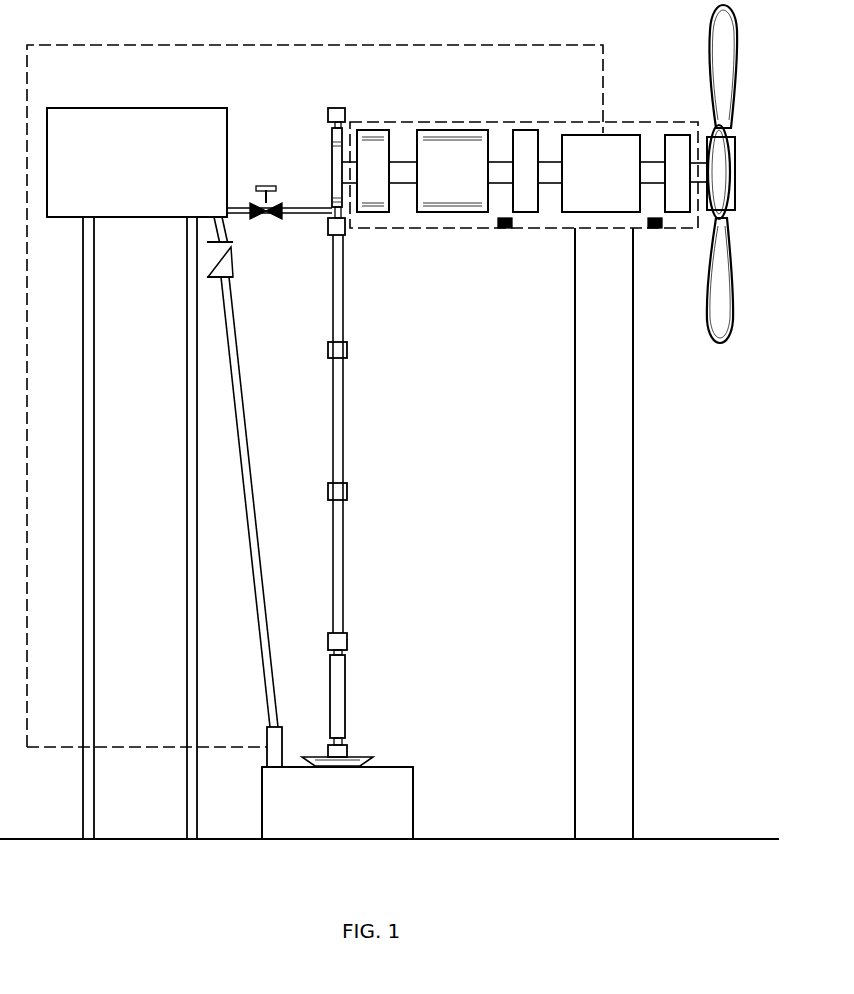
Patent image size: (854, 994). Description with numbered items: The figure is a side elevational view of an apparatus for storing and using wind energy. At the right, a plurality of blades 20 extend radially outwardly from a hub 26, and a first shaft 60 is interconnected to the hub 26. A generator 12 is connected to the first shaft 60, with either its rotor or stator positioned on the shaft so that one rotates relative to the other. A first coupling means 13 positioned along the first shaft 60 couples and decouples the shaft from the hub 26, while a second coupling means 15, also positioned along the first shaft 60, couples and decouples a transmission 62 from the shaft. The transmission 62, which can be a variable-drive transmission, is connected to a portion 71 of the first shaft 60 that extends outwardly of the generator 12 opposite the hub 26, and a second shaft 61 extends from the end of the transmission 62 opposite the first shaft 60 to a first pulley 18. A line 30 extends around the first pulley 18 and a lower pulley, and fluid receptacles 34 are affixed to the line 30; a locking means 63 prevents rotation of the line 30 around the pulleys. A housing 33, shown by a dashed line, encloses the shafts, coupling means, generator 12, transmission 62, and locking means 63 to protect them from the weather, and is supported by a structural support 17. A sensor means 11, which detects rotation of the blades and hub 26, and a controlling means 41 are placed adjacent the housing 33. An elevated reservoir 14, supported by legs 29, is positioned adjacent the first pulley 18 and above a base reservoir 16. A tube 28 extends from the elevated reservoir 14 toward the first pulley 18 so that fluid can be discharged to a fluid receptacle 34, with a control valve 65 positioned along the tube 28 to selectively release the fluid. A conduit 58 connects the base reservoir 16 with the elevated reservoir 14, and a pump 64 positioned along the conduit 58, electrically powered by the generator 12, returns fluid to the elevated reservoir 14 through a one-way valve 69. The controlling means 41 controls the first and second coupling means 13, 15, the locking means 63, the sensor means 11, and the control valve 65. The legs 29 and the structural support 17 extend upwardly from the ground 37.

The sensor means 11 is at (655, 232).
The generator 12 is at (590, 142).
The first coupling means 13 is at (675, 140).
The elevated reservoir 14 is at (139, 170).
The second coupling means 15 is at (530, 140).
The base reservoir 16 is at (352, 811).
The structural support 17 is at (633, 462).
The first pulley 18 is at (332, 140).
The rotor blade 20 is at (725, 35).
The hub 26 is at (730, 140).
The tube 28 is at (312, 215).
The legs 29 is at (94, 423).
The line 30 is at (338, 452).
The housing 33 is at (463, 230).
The fluid receptacle 34 is at (347, 350).
The ground 37 is at (690, 838).
The controlling means 41 is at (505, 232).
The conduit 58 is at (238, 398).
The first shaft 60 is at (548, 178).
The second shaft 61 is at (405, 177).
The transmission 62 is at (452, 128).
The locking means 63 is at (370, 205).
The pump 64 is at (265, 753).
The control valve 65 is at (266, 220).
The one-way valve 69 is at (238, 262).
The portion of the first shaft 71 is at (500, 165).